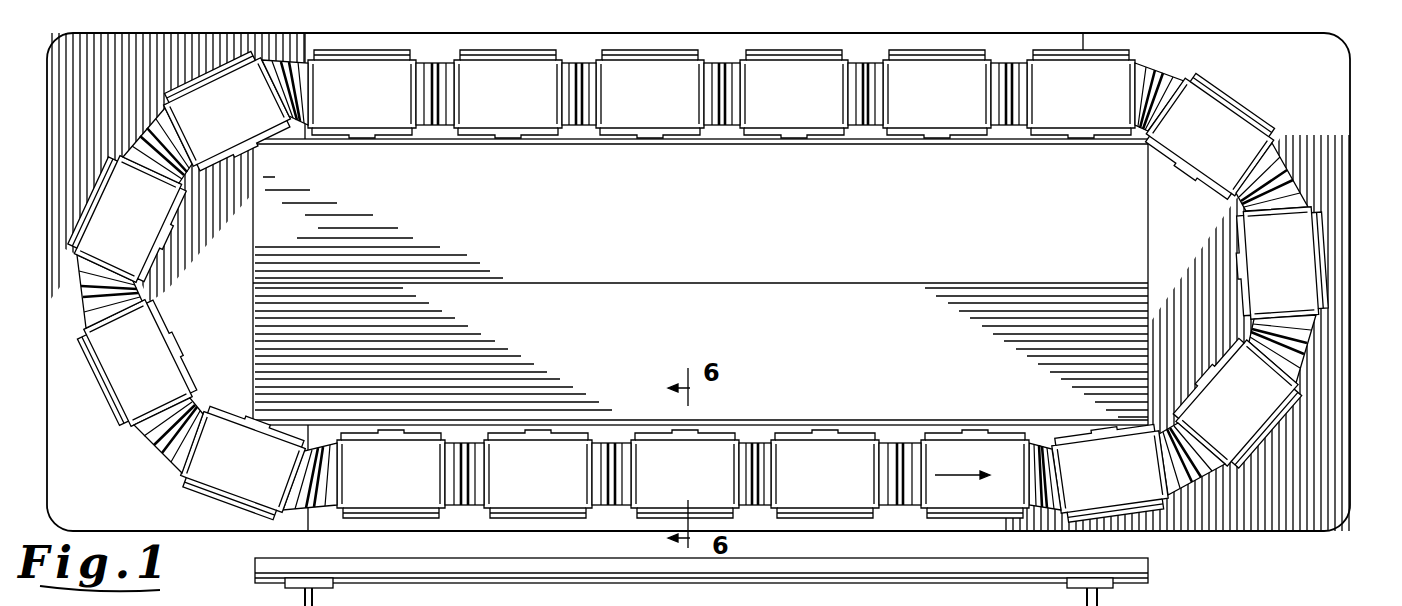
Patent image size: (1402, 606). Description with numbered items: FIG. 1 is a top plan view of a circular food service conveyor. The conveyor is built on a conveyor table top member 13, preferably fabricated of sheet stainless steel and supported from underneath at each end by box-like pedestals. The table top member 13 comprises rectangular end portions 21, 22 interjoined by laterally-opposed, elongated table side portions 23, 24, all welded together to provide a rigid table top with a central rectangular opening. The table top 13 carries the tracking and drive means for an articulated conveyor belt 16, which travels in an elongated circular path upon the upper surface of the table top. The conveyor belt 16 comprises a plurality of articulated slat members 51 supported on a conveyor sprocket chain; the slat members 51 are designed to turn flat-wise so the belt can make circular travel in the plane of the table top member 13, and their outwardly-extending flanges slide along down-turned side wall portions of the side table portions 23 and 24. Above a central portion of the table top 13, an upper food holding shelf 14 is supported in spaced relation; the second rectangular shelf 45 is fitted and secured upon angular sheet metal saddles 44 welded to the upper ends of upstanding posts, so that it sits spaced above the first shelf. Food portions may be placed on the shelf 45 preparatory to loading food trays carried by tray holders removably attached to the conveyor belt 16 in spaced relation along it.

The conveyor table top member 13 is at (1337, 191).
The upper food holding shelf 14 is at (1146, 258).
The articulated conveyor belt 16 is at (173, 455).
The rectangular end portion 21 is at (98, 453).
The rectangular end portion 22 is at (1300, 108).
The table side portion 23 is at (738, 42).
The table side portion 24 is at (798, 527).
The angular sheet metal saddle 44 is at (322, 584).
The second rectangular shelf 45 is at (826, 341).
The articulated slat member 51 is at (585, 127).